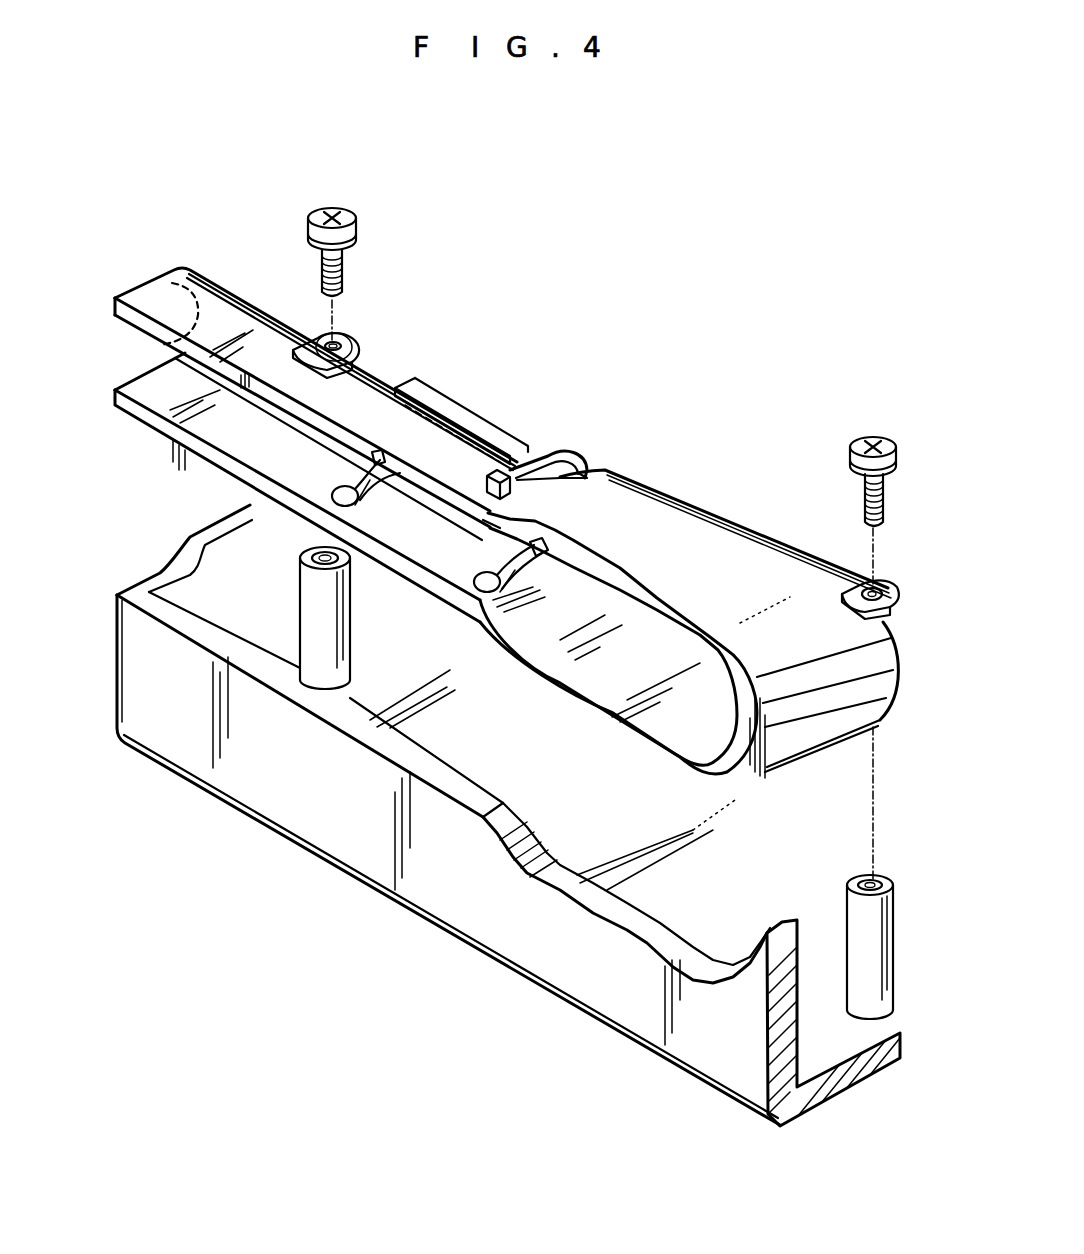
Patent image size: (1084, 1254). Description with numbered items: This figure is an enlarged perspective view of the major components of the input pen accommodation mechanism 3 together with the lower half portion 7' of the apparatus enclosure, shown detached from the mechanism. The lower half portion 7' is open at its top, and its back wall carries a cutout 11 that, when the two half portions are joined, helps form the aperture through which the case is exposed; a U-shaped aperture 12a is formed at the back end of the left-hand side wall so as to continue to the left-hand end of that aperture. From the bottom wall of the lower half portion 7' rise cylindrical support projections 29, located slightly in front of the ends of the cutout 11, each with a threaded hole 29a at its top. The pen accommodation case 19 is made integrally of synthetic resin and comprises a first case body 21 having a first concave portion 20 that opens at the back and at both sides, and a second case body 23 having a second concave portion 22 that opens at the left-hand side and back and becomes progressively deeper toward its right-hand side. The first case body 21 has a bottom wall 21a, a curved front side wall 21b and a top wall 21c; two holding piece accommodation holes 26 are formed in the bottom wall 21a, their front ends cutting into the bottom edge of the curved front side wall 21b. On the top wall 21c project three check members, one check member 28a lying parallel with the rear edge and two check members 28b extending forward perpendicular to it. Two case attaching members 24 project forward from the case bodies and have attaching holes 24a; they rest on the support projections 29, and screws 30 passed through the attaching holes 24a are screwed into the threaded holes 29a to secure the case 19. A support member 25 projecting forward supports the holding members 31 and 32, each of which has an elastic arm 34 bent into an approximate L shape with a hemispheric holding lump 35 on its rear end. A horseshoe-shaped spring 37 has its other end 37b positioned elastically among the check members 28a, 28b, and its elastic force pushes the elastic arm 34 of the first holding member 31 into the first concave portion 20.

The input pen accommodation mechanism 3 is at (707, 463).
The lower half portion 7' is at (508, 783).
The cutouts 11 is at (473, 800).
The U-shaped aperture 12a is at (170, 543).
The pen accommodation case 19 is at (627, 477).
The first concave portion 20 is at (245, 440).
The first case body 21 is at (235, 297).
The bottom wall 21a is at (183, 437).
The curved front side wall 21b is at (193, 302).
The top wall 21c is at (263, 340).
The second concave portion 22 is at (688, 660).
The second case body 23 is at (740, 513).
The case attaching members 24 is at (357, 347).
The attaching holes 24a is at (345, 335).
The support member 25 is at (453, 403).
The holding piece accommodation holes 26 is at (387, 483).
The check member 28a is at (490, 512).
The check members 28b is at (503, 463).
The cylindrical support projections 29 is at (300, 620).
The threaded holes 29a is at (314, 551).
The screws 30 is at (357, 230).
The first holding member 31 is at (497, 691).
The second holding member 32 is at (392, 598).
The elastic arm 34 is at (374, 452).
The holding lump 35 is at (340, 487).
The horseshoe-shaped spring 37 is at (577, 453).
The other end of spring 37b is at (525, 462).